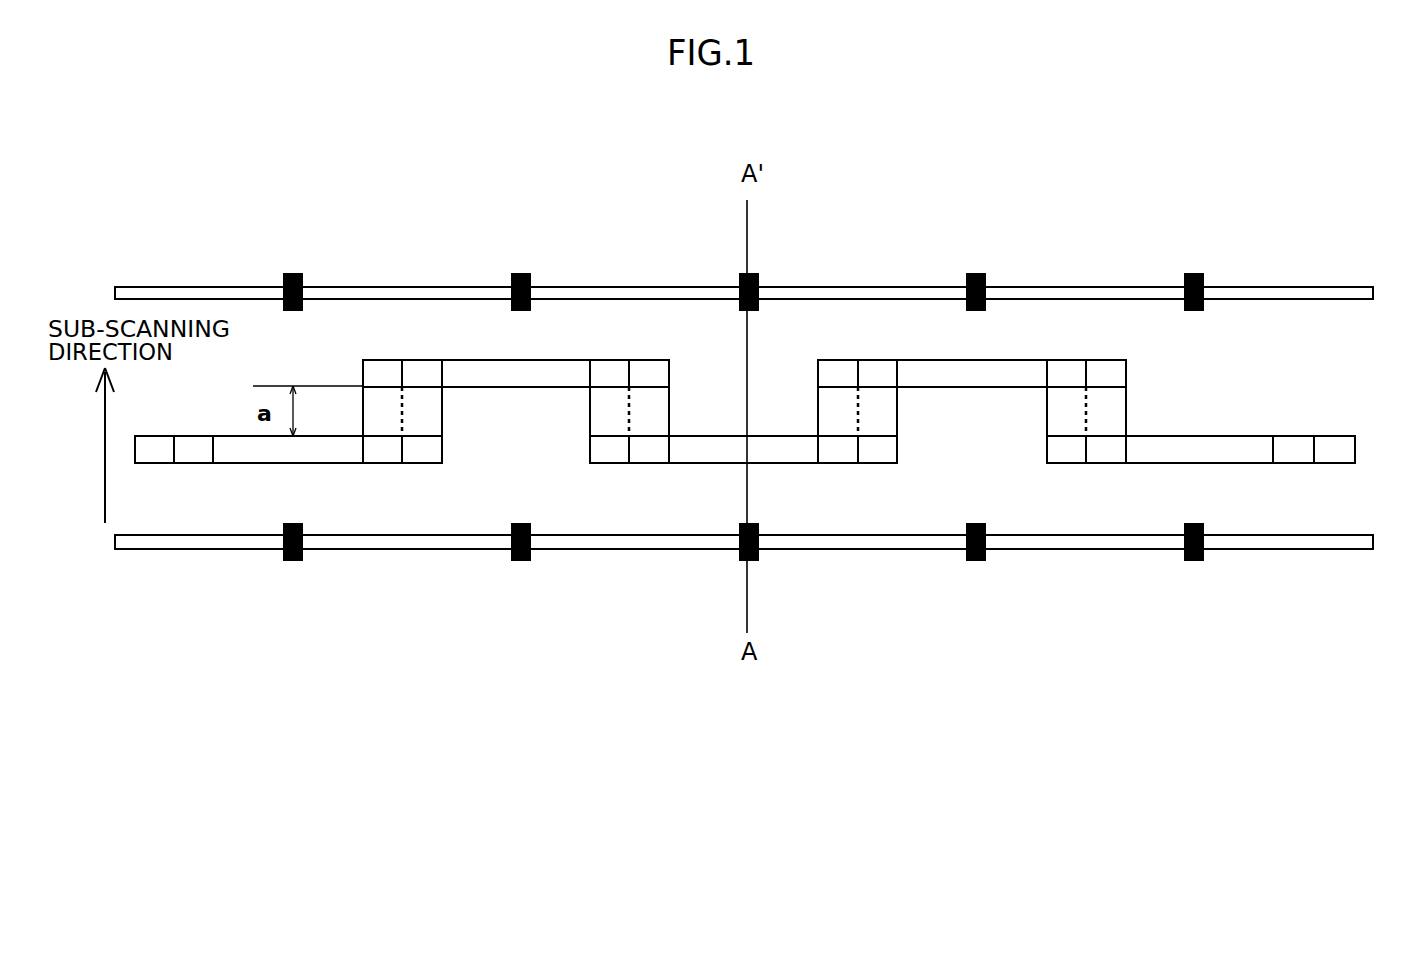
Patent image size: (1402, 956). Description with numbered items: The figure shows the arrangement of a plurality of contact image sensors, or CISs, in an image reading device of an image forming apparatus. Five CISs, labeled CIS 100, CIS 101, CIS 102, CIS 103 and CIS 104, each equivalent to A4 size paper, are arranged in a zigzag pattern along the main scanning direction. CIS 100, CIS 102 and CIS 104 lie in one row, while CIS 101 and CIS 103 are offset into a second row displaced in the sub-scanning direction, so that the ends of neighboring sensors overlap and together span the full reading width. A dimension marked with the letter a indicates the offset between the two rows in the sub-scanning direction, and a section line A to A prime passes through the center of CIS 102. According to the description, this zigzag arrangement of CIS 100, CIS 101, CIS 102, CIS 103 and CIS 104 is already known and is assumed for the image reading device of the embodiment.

The contact image sensor CIS100 100 is at (288, 449).
The contact image sensor CIS101 101 is at (516, 398).
The contact image sensor CIS102 102 is at (743, 425).
The contact image sensor CIS103 103 is at (972, 398).
The contact image sensor CIS104 104 is at (1201, 449).